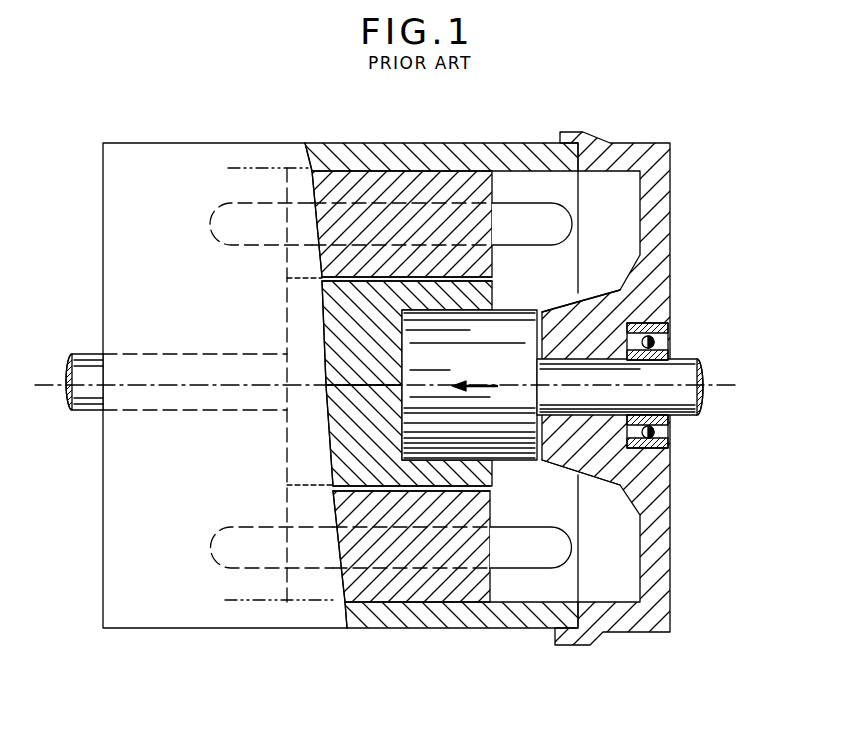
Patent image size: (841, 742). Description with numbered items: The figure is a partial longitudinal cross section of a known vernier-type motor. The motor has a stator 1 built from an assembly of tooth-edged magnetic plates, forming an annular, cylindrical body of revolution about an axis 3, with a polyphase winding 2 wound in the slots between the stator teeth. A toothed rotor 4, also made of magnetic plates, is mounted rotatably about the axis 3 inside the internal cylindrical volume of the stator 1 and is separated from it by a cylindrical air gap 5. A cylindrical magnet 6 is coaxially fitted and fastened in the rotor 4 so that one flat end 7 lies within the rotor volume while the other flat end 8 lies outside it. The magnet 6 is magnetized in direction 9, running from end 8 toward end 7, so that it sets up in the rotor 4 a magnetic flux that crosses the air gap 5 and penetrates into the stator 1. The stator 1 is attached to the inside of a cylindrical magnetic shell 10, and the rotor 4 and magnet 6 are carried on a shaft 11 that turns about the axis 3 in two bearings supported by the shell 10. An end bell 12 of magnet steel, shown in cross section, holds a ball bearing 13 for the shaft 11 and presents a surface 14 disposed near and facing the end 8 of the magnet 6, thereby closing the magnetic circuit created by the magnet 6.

The stator 1 is at (438, 188).
The winding 2 is at (543, 203).
The axis 3 is at (60, 380).
The toothed rotor 4 is at (338, 333).
The air gap 5 is at (490, 278).
The cylindrical magnet 6 is at (510, 350).
The flat end of the magnet 7 is at (395, 417).
The flat end of the magnet 8 is at (533, 438).
The magnetization direction 9 is at (480, 380).
The cylindrical magnetic shell 10 is at (478, 158).
The shaft 11 is at (672, 390).
The end bell 12 is at (650, 530).
The ball bearing 13 is at (670, 326).
The surface 14 is at (550, 437).